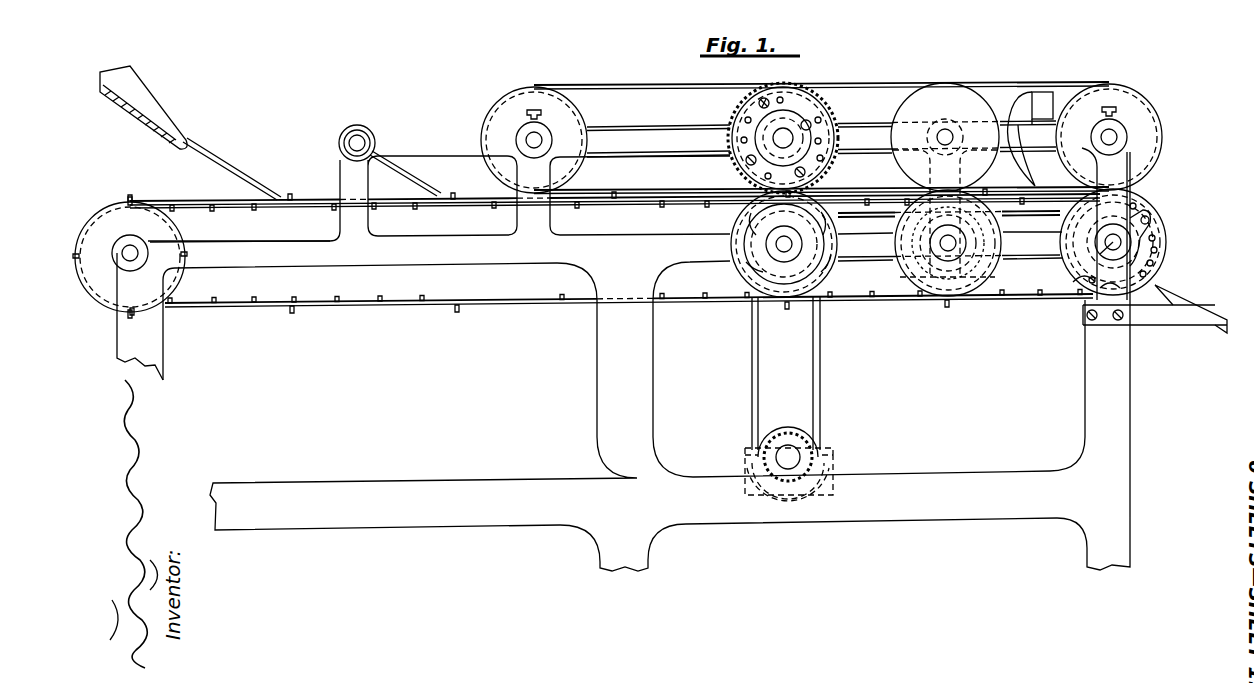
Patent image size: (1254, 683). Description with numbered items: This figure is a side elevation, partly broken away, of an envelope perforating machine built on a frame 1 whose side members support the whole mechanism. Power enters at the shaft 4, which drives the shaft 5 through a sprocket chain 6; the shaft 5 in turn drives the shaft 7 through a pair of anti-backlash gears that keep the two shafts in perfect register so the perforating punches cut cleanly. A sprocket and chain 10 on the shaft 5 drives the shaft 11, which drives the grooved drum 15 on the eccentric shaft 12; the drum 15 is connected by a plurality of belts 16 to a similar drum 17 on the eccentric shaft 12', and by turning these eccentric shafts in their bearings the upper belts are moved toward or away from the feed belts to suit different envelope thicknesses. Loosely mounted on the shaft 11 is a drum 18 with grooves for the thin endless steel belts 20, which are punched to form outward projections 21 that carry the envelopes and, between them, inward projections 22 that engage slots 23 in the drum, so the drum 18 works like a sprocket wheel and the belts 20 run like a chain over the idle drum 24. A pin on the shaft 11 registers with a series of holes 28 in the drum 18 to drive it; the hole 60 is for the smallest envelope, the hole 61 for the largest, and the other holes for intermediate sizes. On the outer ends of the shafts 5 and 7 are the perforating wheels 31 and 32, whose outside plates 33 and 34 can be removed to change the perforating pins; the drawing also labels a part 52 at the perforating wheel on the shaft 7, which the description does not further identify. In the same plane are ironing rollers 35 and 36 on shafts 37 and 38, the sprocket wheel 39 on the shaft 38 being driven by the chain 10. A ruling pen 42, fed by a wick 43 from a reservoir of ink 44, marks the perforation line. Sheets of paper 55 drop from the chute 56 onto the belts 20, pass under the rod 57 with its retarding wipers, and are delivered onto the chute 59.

The frame 1 is at (1093, 394).
The shaft 4 is at (789, 468).
The shaft 5 is at (776, 244).
The sprocket chain 6 is at (822, 380).
The shaft 7 is at (792, 138).
The sprocket and chain 10 is at (1020, 280).
The shaft 11 is at (1104, 238).
The eccentric shaft 12 is at (1150, 135).
The eccentric shaft 12' is at (495, 140).
The drum 15 is at (1126, 108).
The belts 16 is at (868, 85).
The drum 17 is at (572, 116).
The drum 18 is at (1143, 286).
The belts 20 is at (525, 306).
The projections 21 is at (290, 196).
The inwardly projecting projections 22 is at (252, 208).
The slots 23 is at (160, 218).
The idle drum 24 is at (110, 214).
The holes 28 is at (1154, 250).
The perforating wheel 31 is at (742, 97).
The perforating wheel 32 is at (750, 222).
The outside plate 33 is at (748, 170).
The outside plate 34 is at (828, 168).
The ironing roller 35 is at (945, 298).
The ironing roller 36 is at (940, 96).
The shaft 37 is at (937, 139).
The shaft 38 is at (939, 243).
The sprocket wheel 39 is at (916, 248).
The ruling pen 42 is at (1030, 160).
The wick 43 is at (1020, 93).
The reservoir of ink 44 is at (1042, 100).
The gear hub 52 is at (818, 130).
The sheets of paper 55 is at (213, 155).
The chute 56 is at (132, 103).
The shaft or rod 57 is at (364, 137).
The chute 59 is at (1195, 302).
The hole 60 is at (1137, 216).
The hole 61 is at (1150, 260).